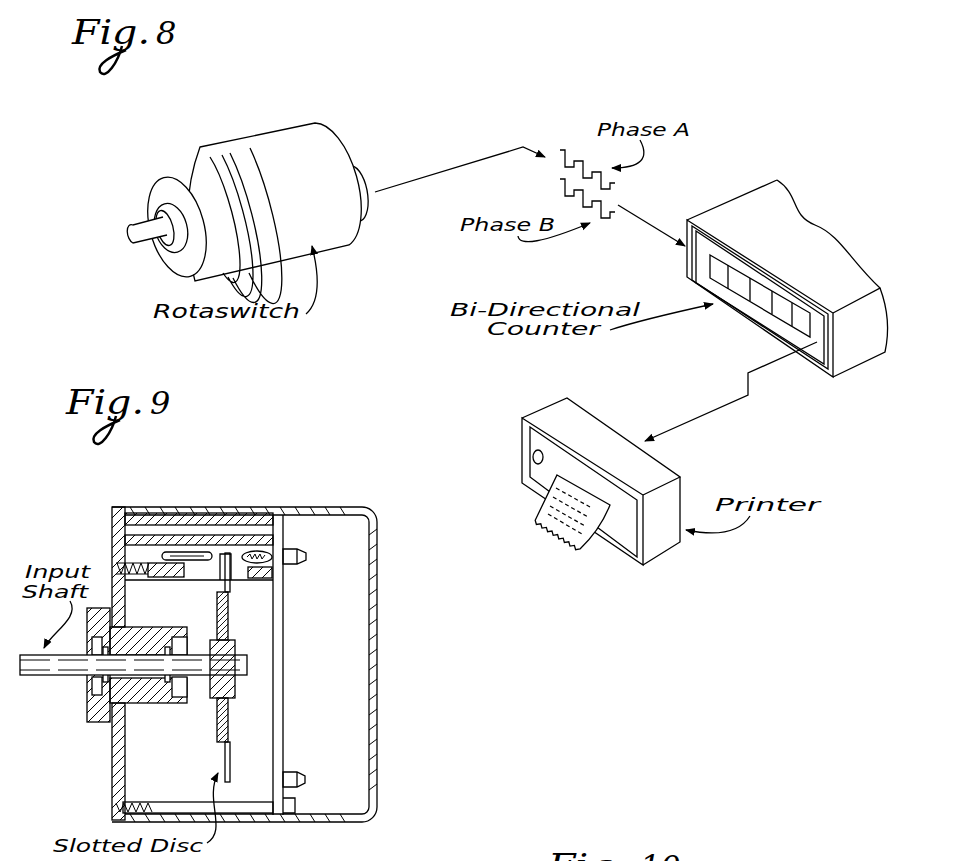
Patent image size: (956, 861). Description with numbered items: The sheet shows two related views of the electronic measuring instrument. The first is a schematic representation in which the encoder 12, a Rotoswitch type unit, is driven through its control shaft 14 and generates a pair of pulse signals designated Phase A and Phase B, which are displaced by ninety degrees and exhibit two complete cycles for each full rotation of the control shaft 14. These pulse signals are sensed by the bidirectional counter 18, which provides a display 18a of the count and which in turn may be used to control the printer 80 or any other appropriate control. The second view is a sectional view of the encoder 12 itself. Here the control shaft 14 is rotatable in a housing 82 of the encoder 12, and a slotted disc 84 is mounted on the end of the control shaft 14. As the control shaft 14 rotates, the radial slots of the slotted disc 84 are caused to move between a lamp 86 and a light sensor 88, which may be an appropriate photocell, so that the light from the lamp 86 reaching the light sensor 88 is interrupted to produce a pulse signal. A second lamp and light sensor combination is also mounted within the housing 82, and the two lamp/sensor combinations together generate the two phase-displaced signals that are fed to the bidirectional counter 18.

In FIG. 8, the encoder 12 is at (327, 145).
In FIG. 9, the encoder 12 is at (373, 577).
In FIG. 8, the control shaft 14 is at (128, 236).
In FIG. 9, the control shaft 14 is at (63, 661).
In FIG. 8, the bidirectional counter 18 is at (745, 205).
In FIG. 8, the display 18a is at (765, 298).
In FIG. 8, the printer 80 is at (655, 547).
In FIG. 9, the housing 82 is at (337, 753).
In FIG. 9, the slotted disc 84 is at (222, 754).
In FIG. 9, the lamp 86 is at (249, 552).
In FIG. 9, the light sensor 88 is at (193, 553).